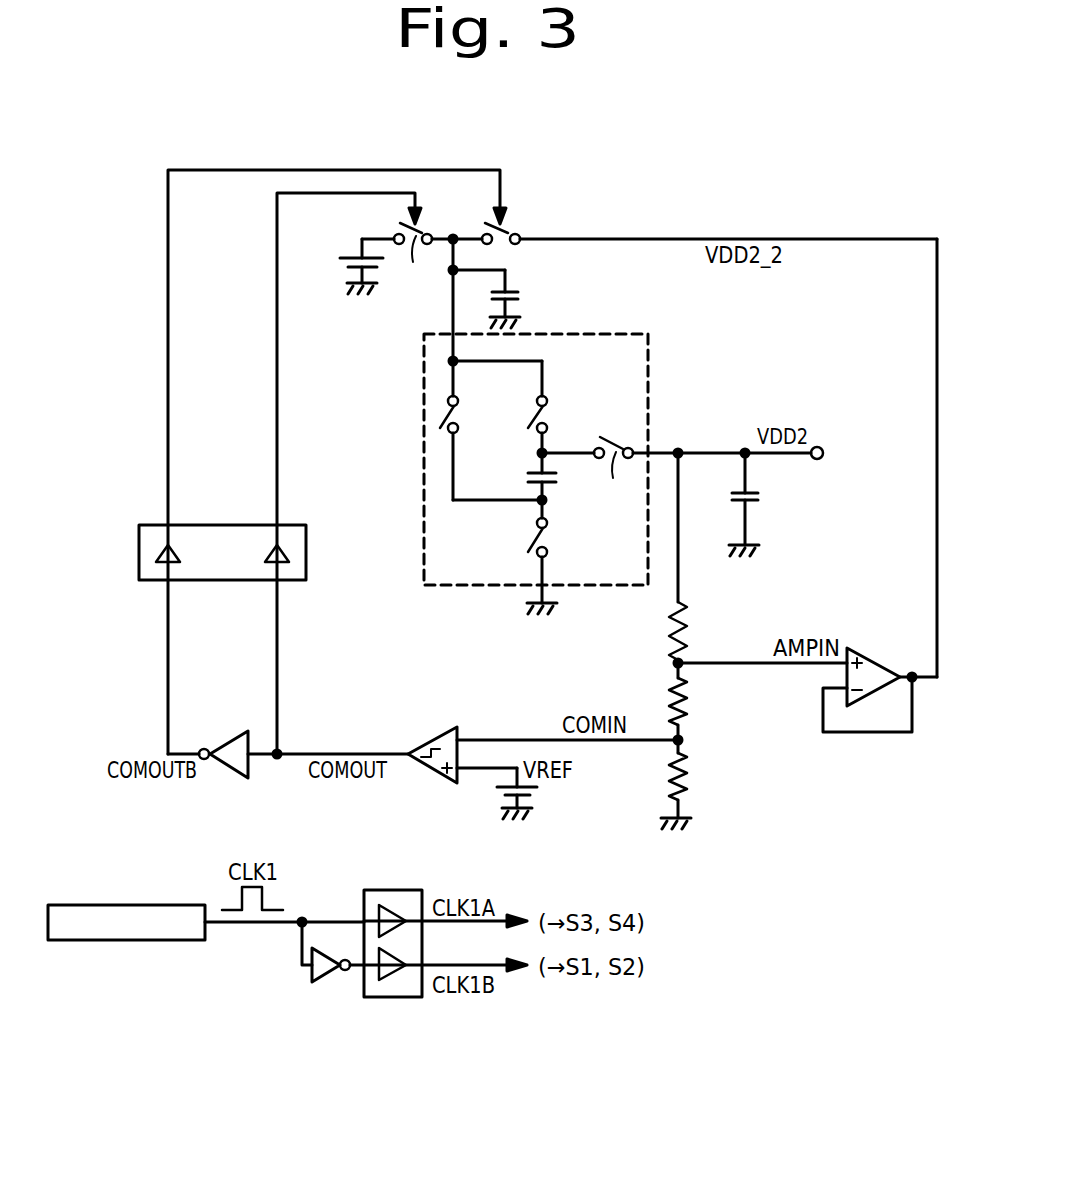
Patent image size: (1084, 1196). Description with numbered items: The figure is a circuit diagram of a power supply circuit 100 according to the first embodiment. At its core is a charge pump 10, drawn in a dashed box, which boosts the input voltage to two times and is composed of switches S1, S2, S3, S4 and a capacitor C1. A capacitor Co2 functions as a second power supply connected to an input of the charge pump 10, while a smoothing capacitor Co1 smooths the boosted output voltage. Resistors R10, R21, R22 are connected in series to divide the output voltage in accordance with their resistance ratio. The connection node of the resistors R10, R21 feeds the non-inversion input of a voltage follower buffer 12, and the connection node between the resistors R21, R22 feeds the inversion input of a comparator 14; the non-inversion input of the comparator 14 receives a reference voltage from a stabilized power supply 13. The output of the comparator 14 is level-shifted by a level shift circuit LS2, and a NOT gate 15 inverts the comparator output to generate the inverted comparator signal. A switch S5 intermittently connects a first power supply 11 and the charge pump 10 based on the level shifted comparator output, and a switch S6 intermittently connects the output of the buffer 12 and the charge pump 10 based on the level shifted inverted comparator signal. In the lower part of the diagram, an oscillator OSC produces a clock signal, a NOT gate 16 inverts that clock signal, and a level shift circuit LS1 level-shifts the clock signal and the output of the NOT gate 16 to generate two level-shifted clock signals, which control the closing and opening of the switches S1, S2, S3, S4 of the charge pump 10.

The charge pump 10 is at (575, 469).
The first power supply 11 is at (355, 255).
The voltage follower buffer 12 is at (873, 657).
The stabilized power supply 13 is at (537, 789).
The comparator 14 is at (430, 735).
The NOT gate 15 is at (232, 733).
The NOT gate 16 is at (312, 982).
The power supply circuit 100 is at (825, 1016).
The switch S1 is at (548, 412).
The switch S2 is at (548, 536).
The switch S3 is at (459, 414).
The switch S4 is at (587, 471).
The switch S5 is at (413, 257).
The switch S6 is at (512, 228).
The capacitor C1 is at (538, 468).
The smoothing capacitor Co1 is at (753, 503).
The capacitor Co2 is at (512, 288).
The resistor R10 is at (690, 625).
The resistor R21 is at (690, 702).
The resistor R22 is at (690, 778).
The level shift circuit LS1 is at (393, 890).
The level shift circuit LS2 is at (223, 525).
The oscillator OSC is at (127, 905).